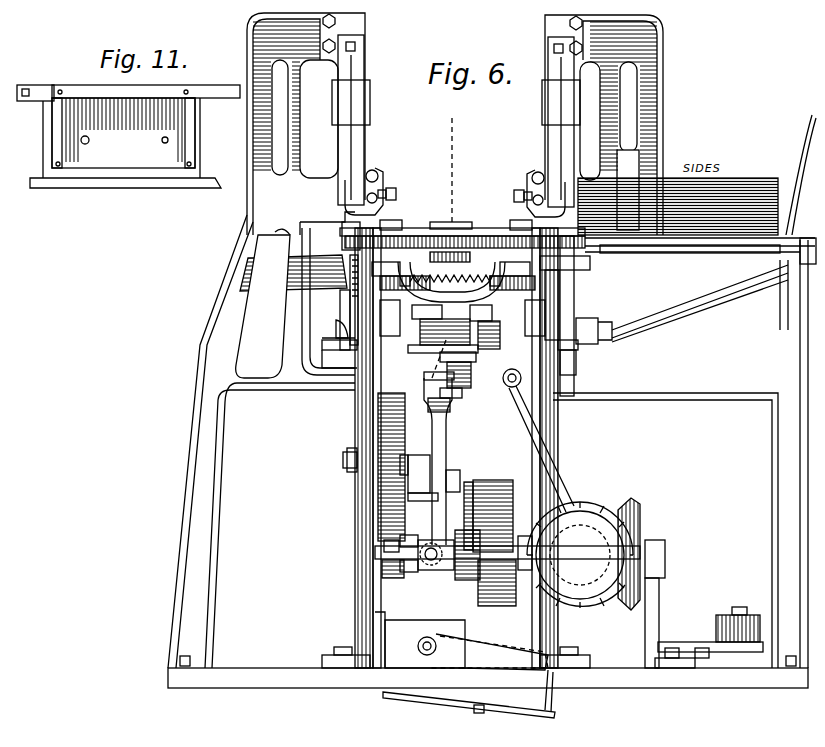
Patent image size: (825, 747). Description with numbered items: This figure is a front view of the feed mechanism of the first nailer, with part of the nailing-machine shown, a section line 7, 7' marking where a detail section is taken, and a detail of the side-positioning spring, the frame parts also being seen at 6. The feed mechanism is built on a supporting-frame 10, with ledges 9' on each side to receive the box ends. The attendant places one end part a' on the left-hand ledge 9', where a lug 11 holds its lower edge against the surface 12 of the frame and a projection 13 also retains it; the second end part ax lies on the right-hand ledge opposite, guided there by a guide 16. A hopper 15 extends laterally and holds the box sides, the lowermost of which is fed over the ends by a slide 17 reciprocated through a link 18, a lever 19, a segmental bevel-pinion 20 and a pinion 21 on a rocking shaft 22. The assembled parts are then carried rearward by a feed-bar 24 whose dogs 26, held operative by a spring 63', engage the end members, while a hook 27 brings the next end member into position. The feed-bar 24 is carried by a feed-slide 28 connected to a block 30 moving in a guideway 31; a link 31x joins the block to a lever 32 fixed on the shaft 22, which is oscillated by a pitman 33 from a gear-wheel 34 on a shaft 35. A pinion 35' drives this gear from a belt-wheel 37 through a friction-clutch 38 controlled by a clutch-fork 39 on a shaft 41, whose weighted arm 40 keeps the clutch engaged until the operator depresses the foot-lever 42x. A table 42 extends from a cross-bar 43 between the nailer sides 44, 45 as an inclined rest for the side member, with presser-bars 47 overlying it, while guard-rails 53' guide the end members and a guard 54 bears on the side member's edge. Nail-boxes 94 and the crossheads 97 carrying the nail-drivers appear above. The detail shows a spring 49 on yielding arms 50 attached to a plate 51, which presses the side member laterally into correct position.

In FIG. 6, the cross bar 6 is at (400, 226).
In FIG. 6, the center line 7 is at (449, 160).
In FIG. 6, the center line 7' is at (428, 366).
In FIG. 6, the ledge 9' is at (439, 379).
In FIG. 6, the supporting-frame 10 is at (365, 414).
In FIG. 6, the lug 11 is at (336, 334).
In FIG. 6, the surface of the frame 12 is at (358, 316).
In FIG. 6, the projection 13 is at (293, 273).
In FIG. 6, the hopper 15 is at (787, 175).
In FIG. 6, the guide 16 is at (600, 336).
In FIG. 6, the slide 17 is at (702, 250).
In FIG. 6, the link 18 is at (700, 311).
In FIG. 6, the lever 19 is at (572, 506).
In FIG. 6, the segmental bevel-pinion 20 is at (600, 520).
In FIG. 6, the pinion 21 is at (640, 520).
In FIG. 6, the shaft 22 is at (656, 546).
In FIG. 6, the feed-bar 24 is at (445, 290).
In FIG. 6, the dogs 26 is at (458, 299).
In FIG. 6, the hook 27 is at (562, 264).
In FIG. 6, the feed-slide 28 is at (443, 329).
In FIG. 6, the block 30 is at (470, 366).
In FIG. 6, the guideway 31 is at (474, 340).
In FIG. 6, the link 31x is at (458, 388).
In FIG. 6, the lever 32 is at (440, 465).
In FIG. 6, the pitman 33 is at (418, 462).
In FIG. 6, the gear-wheel 34 is at (384, 472).
In FIG. 6, the shaft 35 is at (336, 468).
In FIG. 6, the pinion 35' is at (361, 581).
In FIG. 6, the belt-wheel 37 is at (502, 490).
In FIG. 6, the friction-clutch 38 is at (467, 492).
In FIG. 6, the clutch-fork 39 is at (420, 592).
In FIG. 6, the weighted arm 40 is at (684, 648).
In FIG. 6, the shaft 41 is at (425, 646).
In FIG. 6, the table 42 is at (426, 228).
In FIG. 6, the foot-lever 42x is at (494, 712).
In FIG. 6, the cross-bar 43 is at (478, 240).
In FIG. 6, the side of the nailer 44 is at (604, 117).
In FIG. 6, the side of the nailer 45 is at (306, 117).
In FIG. 6, the presser-bars 47 is at (392, 218).
In FIG. 11, the spring 49 is at (206, 95).
In FIG. 11, the yielding arms 50 is at (60, 122).
In FIG. 11, the plate 51 is at (123, 130).
In FIG. 6, the guard-rails 53' is at (522, 291).
In FIG. 6, the guard 54 is at (343, 220).
In FIG. 6, the spring 63' is at (462, 269).
In FIG. 6, the nail-boxes 94 is at (370, 180).
In FIG. 6, the crosshead 97 is at (368, 112).
In FIG. 6, the end part a' is at (336, 300).
In FIG. 6, the end part ax is at (555, 312).